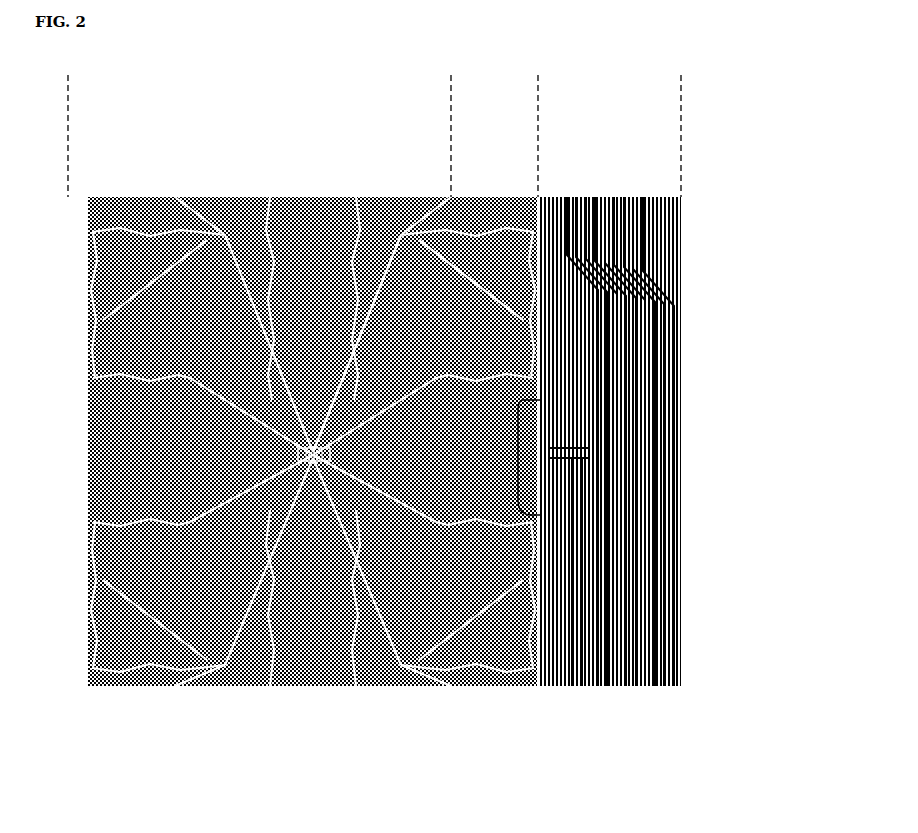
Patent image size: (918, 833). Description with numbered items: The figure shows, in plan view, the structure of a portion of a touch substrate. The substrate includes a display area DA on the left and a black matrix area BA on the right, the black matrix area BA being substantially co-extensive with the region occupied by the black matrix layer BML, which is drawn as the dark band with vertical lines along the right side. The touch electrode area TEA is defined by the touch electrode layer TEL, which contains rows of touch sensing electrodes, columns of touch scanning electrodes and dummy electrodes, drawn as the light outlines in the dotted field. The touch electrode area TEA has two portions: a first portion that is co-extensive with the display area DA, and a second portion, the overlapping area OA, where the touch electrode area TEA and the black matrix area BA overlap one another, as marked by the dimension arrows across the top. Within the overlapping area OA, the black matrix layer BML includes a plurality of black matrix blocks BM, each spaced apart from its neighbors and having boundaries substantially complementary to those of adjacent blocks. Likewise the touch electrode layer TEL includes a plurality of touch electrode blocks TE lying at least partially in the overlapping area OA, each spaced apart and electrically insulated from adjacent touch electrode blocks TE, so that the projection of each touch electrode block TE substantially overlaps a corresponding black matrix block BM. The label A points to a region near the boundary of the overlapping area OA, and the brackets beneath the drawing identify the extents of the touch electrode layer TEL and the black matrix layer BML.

The touch electrode area TEA is at (538, 144).
The display area DA is at (451, 178).
The overlapping area OA is at (538, 178).
The black matrix area BA is at (681, 110).
The touch electrode block TE is at (448, 297).
The black matrix block BM is at (480, 308).
The region A is at (508, 400).
The touch electrode layer TEL is at (538, 688).
The black matrix layer BML is at (616, 491).